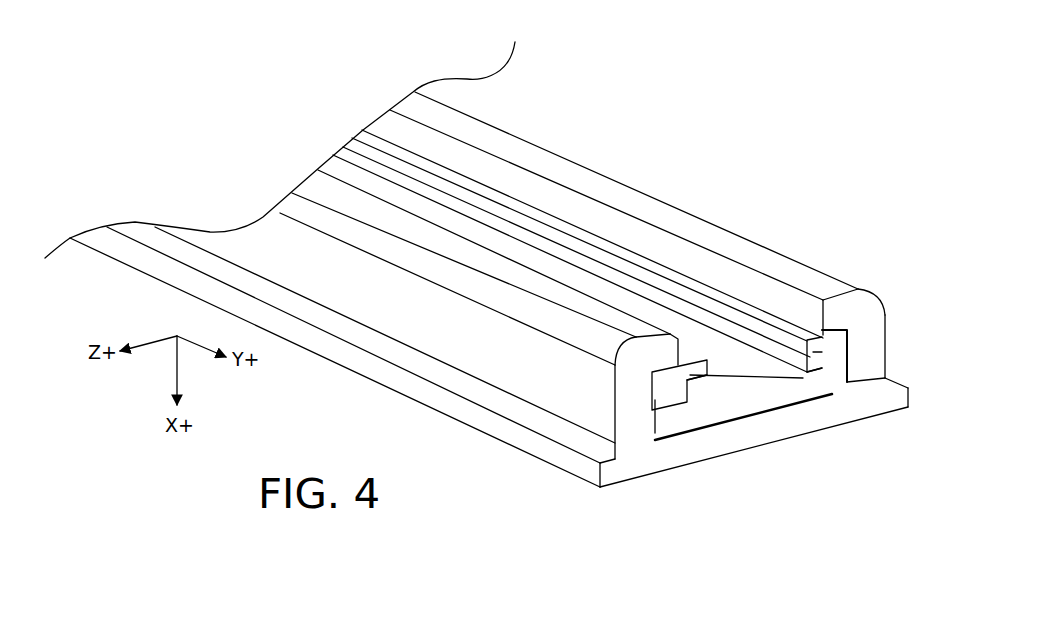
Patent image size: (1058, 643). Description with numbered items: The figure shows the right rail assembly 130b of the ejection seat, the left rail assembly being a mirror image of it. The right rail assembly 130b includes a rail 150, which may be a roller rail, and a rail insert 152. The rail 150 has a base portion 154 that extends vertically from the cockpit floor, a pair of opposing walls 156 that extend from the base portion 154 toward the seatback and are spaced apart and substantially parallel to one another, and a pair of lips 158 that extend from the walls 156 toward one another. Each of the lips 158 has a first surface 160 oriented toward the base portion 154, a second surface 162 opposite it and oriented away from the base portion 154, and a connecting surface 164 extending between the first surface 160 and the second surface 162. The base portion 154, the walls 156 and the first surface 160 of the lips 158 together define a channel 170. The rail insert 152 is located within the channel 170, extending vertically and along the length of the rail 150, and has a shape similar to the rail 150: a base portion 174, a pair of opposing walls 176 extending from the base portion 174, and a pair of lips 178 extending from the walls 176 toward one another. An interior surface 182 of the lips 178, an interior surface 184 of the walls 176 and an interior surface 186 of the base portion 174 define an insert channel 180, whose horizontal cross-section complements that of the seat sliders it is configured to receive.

The right rail assembly 130b is at (240, 128).
The rail 150 is at (878, 291).
The rail insert 152 is at (767, 371).
The base portion 154 is at (793, 426).
The walls 156 is at (620, 388).
The lips 158 is at (658, 363).
The first surface 160 is at (842, 366).
The second surface 162 is at (604, 192).
The connecting surface 164 is at (515, 182).
The channel 170 is at (662, 430).
The base portion 174 is at (732, 405).
The walls 176 is at (665, 398).
The lips 178 is at (697, 362).
The insert channel 180 is at (700, 398).
The interior surface 182 is at (706, 378).
The interior surface 184 is at (803, 396).
The interior surface 186 is at (688, 330).